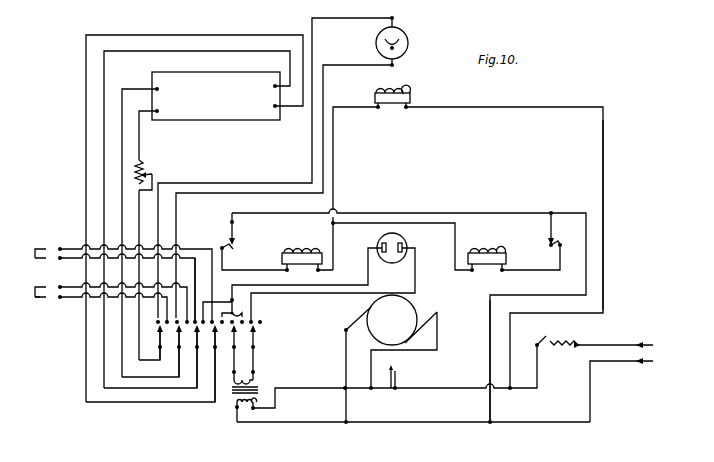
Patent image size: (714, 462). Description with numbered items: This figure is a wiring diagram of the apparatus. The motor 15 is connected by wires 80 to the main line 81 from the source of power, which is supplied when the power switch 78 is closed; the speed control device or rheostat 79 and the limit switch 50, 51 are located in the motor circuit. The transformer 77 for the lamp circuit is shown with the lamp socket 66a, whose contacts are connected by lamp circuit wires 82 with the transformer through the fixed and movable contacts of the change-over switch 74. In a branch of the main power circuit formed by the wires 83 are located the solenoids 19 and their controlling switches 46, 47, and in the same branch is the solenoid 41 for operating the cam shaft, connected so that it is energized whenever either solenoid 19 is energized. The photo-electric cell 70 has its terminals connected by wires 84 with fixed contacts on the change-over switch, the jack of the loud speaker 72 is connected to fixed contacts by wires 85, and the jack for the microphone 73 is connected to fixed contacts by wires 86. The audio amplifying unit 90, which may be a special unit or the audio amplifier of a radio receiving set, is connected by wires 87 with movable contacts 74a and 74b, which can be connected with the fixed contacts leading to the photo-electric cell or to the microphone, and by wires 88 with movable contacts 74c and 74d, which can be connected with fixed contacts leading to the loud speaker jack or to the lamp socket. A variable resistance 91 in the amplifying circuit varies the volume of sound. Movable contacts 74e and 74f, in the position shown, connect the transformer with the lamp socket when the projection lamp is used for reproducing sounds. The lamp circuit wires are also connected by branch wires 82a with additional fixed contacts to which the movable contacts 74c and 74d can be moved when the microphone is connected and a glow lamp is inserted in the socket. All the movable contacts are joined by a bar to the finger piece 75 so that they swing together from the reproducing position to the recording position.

The wires 88 is at (218, 50).
The audio amplifying unit 90 is at (220, 121).
The wires 87 is at (124, 148).
The variable resistance 91 is at (149, 173).
The photo-electric cell 70 is at (405, 37).
The wires 84 is at (348, 66).
The solenoid 41 is at (393, 108).
The jack of the loud speaker 72 is at (52, 248).
The wires 86 is at (72, 295).
The jack for the microphone 73 is at (44, 302).
The wires 85 is at (195, 256).
The controlling switch 46 is at (236, 232).
The controlling switch 47 is at (391, 255).
The solenoids 19 is at (304, 248).
The lamp circuit wires 82 is at (368, 270).
The lamp socket 66a is at (406, 240).
The branch wires 82a is at (208, 306).
The change-over switch 74 is at (254, 330).
The movable contact 74a is at (158, 340).
The movable contact 74b is at (178, 350).
The movable contact 74c is at (196, 350).
The movable contact 74d is at (214, 350).
The movable contact 74e is at (245, 370).
The movable contact 74f is at (253, 340).
The finger piece 75 is at (232, 350).
The transformer 77 is at (236, 398).
The speed control device or rheostat 79 is at (349, 351).
The motor 15 is at (392, 320).
The wires 80 is at (437, 336).
The limit switch 50 is at (383, 376).
The limit switch 51 is at (397, 379).
The main line 81 is at (440, 390).
The wires 83 is at (604, 297).
The power switch 78 is at (548, 341).